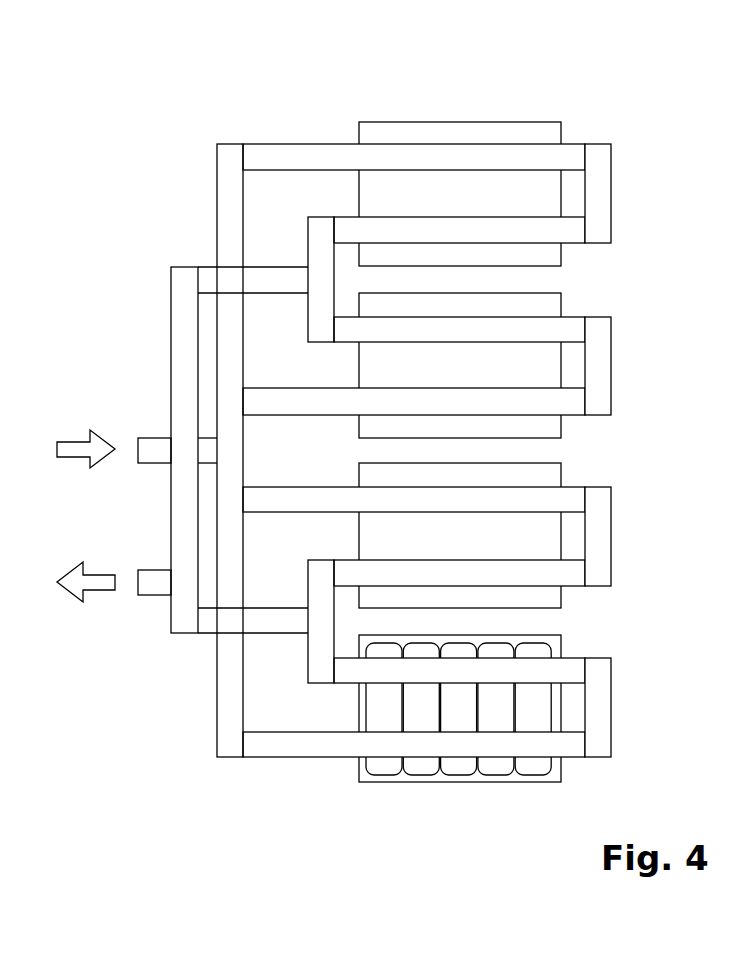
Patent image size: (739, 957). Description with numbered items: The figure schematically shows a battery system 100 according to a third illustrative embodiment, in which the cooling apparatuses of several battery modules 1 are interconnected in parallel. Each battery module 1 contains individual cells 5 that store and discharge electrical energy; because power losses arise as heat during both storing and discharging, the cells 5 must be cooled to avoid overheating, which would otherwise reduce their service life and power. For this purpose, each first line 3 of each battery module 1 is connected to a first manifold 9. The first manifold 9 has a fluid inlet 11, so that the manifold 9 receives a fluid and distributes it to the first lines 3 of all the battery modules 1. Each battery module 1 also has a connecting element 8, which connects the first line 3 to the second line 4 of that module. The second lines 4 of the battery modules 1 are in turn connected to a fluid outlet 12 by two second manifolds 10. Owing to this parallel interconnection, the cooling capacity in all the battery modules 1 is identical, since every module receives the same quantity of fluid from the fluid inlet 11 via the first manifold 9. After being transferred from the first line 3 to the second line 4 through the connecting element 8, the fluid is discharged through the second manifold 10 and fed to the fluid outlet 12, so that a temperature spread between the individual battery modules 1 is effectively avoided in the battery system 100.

The battery system 100 is at (604, 70).
The battery module 1 is at (547, 257).
The first line 3 is at (572, 157).
The second line 4 is at (572, 233).
The individual cells 5 is at (425, 765).
The connecting element 8 is at (598, 190).
The first manifold 9 is at (228, 207).
The second manifold 10 is at (320, 228).
The fluid inlet 11 is at (73, 440).
The fluid outlet 12 is at (100, 572).